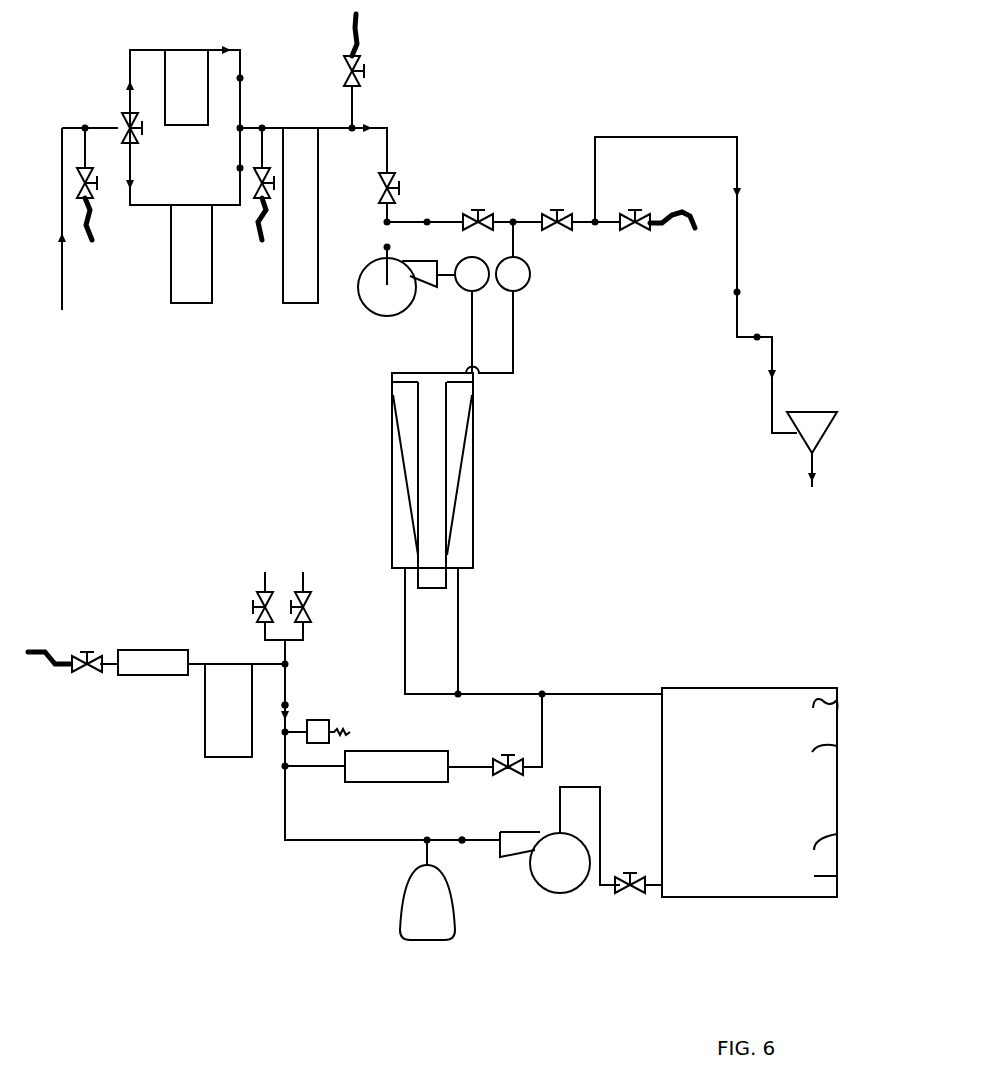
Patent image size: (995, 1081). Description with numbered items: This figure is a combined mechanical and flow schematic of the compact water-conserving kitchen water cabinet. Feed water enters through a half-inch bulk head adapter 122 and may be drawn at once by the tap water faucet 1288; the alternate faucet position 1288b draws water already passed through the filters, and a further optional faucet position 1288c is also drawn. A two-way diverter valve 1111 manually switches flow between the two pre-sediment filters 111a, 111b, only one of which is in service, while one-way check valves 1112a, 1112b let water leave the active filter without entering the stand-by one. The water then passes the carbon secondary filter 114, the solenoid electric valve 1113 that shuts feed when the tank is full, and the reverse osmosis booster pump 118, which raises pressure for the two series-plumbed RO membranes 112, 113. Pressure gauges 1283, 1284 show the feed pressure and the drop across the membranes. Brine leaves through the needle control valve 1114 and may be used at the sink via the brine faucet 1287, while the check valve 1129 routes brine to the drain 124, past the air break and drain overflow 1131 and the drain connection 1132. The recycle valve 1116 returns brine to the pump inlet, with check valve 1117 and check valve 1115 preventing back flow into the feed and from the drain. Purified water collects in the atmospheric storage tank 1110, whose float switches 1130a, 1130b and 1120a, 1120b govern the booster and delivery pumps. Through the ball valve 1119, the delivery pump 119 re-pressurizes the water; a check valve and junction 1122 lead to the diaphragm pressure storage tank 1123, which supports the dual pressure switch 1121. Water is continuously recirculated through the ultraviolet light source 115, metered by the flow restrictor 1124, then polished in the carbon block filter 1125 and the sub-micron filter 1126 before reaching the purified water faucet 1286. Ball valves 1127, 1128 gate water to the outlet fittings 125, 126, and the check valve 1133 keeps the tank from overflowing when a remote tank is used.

The sediment filter 111a is at (186, 62).
The one-way check valve 1112a is at (243, 80).
The two-way diverter valve 1111 is at (126, 122).
The manual valve 1288c is at (360, 40).
The electric valve 1113 is at (408, 188).
The one-way check valve 1117 is at (428, 219).
The brine waste water recycle valve 1116 is at (484, 210).
The manually adjustable needle control valve 1114 is at (557, 209).
The brine faucet 1287 is at (693, 192).
The one-way check valve 1112b is at (240, 168).
The tap water faucet 1288 is at (100, 230).
The faucet 1288b is at (258, 232).
The one-way check valve 1115 is at (386, 243).
The pressure gauge 1283 is at (464, 255).
The pressure gauge 1284 is at (528, 275).
The reverse osmosis booster pump 118 is at (405, 304).
The bulk head adapter 122 is at (64, 310).
The sediment filter 111b is at (180, 296).
The secondary filter 114 is at (288, 304).
The one-way check valve 1129 is at (741, 290).
The air break and drain overflow 1131 is at (762, 334).
The drain connection 1132 is at (880, 410).
The drain 124 is at (812, 483).
The reverse osmosis membrane 112 is at (392, 470).
The reverse osmosis membrane 113 is at (474, 472).
The outlet fitting 125 is at (265, 573).
The outlet fitting 126 is at (304, 578).
The ball valve 1127 is at (260, 612).
The ball valve 1128 is at (310, 610).
The faucet 1286 is at (46, 650).
The sub-micron filter 1126 is at (150, 654).
The final polishing filter 1125 is at (207, 708).
The one-way check valve 1133 is at (288, 704).
The dual pressure switch 1121 is at (322, 722).
The ultraviolet light source 115 is at (445, 752).
The flow restrictor 1124 is at (506, 760).
The pipe junction 1122 is at (464, 840).
The diaphragm pressure water storage tank 1123 is at (445, 934).
The delivery pump 119 is at (578, 875).
The atmospheric storage tank 1110 is at (749, 792).
The RO float switch 1130a is at (865, 706).
The RO float switch 1130b is at (865, 750).
The lower limit float switch 1120a is at (862, 836).
The upper limit float switch 1120b is at (865, 880).
The ball valve 1119 is at (631, 892).